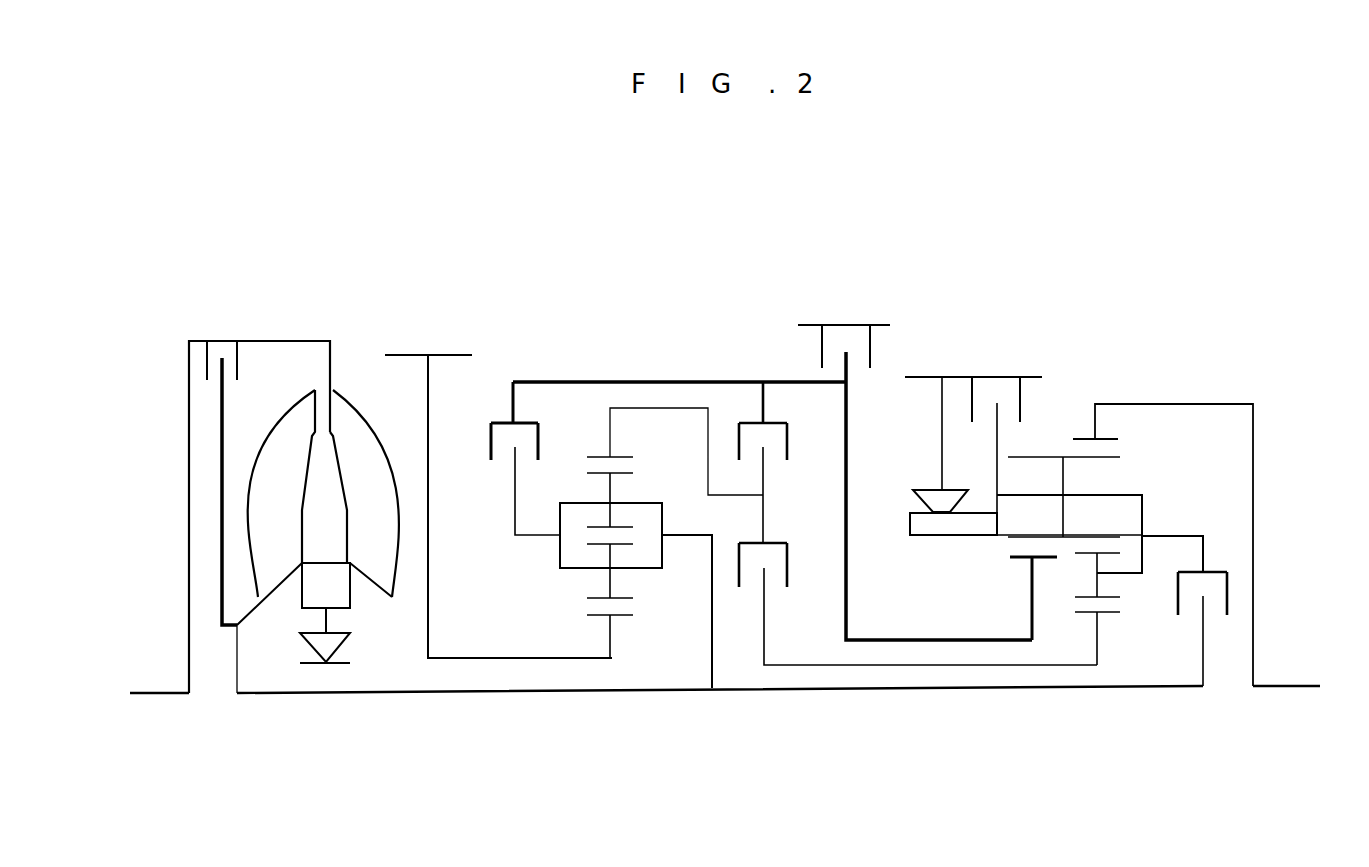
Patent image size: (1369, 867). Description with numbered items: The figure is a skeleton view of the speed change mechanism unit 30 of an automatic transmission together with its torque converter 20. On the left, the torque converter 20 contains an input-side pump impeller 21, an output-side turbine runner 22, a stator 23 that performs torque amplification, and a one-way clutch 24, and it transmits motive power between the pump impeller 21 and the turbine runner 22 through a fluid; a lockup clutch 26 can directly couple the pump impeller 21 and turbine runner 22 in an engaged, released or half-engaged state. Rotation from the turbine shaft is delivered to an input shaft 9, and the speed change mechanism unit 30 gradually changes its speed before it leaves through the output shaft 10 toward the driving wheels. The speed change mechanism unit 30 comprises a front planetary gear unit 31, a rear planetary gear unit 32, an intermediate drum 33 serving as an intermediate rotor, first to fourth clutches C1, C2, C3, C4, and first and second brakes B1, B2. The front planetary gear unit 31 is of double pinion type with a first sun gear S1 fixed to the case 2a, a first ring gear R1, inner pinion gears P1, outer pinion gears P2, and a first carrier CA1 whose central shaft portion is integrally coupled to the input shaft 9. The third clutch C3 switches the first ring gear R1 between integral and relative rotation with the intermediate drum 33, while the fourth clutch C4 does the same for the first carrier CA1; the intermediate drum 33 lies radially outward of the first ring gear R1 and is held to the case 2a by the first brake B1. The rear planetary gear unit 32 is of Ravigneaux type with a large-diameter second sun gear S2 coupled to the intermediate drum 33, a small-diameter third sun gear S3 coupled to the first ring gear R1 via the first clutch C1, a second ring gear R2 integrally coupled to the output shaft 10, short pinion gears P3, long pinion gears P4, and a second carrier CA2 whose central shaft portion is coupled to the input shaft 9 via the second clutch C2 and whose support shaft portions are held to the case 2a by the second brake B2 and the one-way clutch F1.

The input shaft 9 is at (510, 692).
The output shaft 10 is at (1320, 686).
The torque converter 20 is at (308, 333).
The pump impeller 21 is at (370, 440).
The turbine runner 22 is at (290, 430).
The stator 23 is at (342, 593).
The one-way clutch 24 is at (315, 653).
The lockup clutch 26 is at (237, 358).
The case 2a is at (448, 350).
The speed change mechanism unit 30 is at (748, 355).
The front planetary gear unit 31 is at (624, 494).
The rear planetary gear unit 32 is at (1120, 490).
The intermediate drum 33 is at (675, 382).
The first ring gear R1 is at (615, 458).
The outer pinion gears P2 is at (607, 492).
The first carrier CA1 is at (560, 553).
The inner pinion gears P1 is at (610, 580).
The first sun gear S1 is at (620, 617).
The first clutch C1 is at (790, 565).
The second clutch C2 is at (1212, 572).
The third clutch C3 is at (787, 447).
The fourth clutch C4 is at (490, 448).
The first brake B1 is at (886, 351).
The second brake B2 is at (1041, 400).
The one-way clutch F1 is at (930, 489).
The second ring gear R2 is at (1113, 440).
The long pinion gears P4 is at (1063, 478).
The second carrier CA2 is at (1142, 507).
The second sun gear S2 is at (1023, 558).
The short pinion gears P3 is at (1095, 583).
The third sun gear S3 is at (1107, 613).